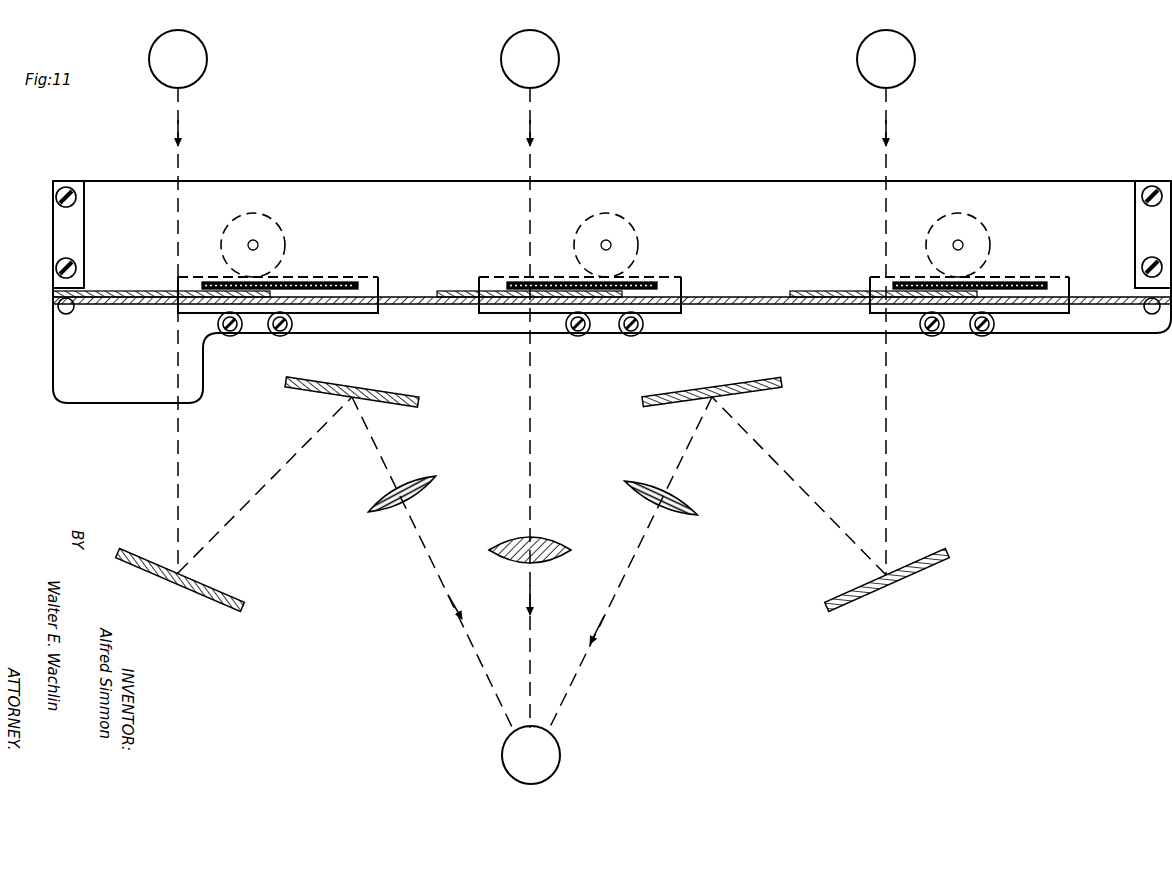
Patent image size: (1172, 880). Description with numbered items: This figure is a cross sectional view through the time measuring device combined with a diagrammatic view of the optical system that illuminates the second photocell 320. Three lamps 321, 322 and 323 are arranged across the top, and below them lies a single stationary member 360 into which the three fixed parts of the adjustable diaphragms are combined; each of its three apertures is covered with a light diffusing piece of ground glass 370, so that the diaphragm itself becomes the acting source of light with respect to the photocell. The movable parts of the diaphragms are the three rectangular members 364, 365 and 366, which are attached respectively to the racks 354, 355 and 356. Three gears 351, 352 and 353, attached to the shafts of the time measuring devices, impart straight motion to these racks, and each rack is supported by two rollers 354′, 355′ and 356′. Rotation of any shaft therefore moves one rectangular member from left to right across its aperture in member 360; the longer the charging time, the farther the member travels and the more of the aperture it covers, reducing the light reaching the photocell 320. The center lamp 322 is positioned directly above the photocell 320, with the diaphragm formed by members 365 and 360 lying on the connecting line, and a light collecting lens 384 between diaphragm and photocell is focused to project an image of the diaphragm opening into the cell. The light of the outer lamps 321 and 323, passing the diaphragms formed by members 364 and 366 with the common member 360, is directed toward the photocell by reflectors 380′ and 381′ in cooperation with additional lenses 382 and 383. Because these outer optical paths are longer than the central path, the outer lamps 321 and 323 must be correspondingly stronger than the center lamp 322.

The second photo-electric cell 320 is at (548, 755).
The lamp 321 is at (200, 49).
The lamp 322 is at (552, 49).
The lamp 323 is at (908, 49).
The gear 351 is at (280, 228).
The gear 352 is at (630, 225).
The gear 353 is at (980, 222).
The rack 354 is at (351, 276).
The rack 355 is at (547, 276).
The rack 356 is at (910, 276).
The rollers 354′ is at (255, 333).
The rollers 355′ is at (604, 333).
The rollers 356′ is at (957, 333).
The stationary diaphragm member 360 is at (408, 304).
The rectangular diaphragm member 364 is at (298, 282).
The rectangular diaphragm member 365 is at (636, 282).
The rectangular diaphragm member 366 is at (1005, 282).
The ground glass 370 is at (128, 283).
The reflector 380′ is at (180, 582).
The mirror 381′ is at (887, 580).
The lens 382 is at (399, 500).
The lens 383 is at (670, 497).
The light collecting lens 384 is at (530, 540).